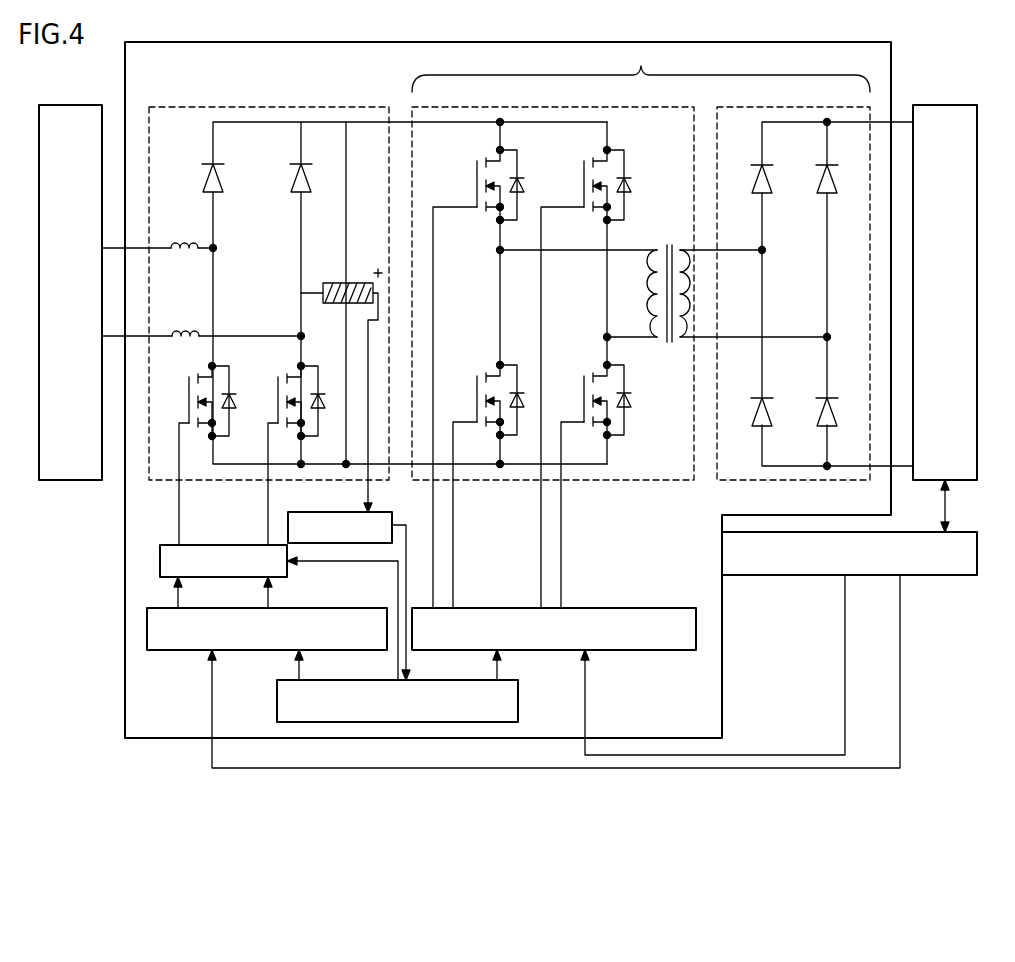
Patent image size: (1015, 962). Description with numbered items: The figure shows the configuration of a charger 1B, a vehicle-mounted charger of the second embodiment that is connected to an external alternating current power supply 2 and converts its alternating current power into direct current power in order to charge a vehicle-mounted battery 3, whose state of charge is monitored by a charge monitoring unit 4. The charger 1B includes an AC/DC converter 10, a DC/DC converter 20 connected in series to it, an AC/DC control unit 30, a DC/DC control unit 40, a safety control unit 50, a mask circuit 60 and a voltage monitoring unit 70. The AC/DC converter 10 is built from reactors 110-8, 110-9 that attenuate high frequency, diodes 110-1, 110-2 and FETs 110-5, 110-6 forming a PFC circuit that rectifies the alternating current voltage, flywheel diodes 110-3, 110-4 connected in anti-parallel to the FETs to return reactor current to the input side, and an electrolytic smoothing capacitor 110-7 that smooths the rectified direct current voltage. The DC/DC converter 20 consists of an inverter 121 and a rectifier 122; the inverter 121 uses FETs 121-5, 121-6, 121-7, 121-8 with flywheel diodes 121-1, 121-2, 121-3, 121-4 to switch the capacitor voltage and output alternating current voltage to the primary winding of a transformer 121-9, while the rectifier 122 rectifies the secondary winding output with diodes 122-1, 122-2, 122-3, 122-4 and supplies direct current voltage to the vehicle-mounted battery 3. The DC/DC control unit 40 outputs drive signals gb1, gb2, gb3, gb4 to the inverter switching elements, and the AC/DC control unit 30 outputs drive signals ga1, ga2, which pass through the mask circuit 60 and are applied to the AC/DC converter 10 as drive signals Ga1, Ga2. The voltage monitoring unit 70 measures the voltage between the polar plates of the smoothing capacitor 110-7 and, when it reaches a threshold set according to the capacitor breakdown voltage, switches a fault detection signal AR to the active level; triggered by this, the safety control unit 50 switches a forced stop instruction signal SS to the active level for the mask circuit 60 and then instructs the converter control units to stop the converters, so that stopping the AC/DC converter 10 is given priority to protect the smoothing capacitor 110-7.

The charger 1B is at (125, 592).
The external alternating current power supply 2 is at (72, 105).
The vehicle-mounted battery 3 is at (947, 105).
The charge monitoring unit 4 is at (946, 576).
The AC/DC converter 10 is at (285, 107).
The DC/DC converter 20 is at (641, 70).
The inverter 121 is at (600, 107).
The rectifier 122 is at (781, 107).
The AC/DC control unit 30 is at (172, 651).
The DC/DC control unit 40 is at (650, 651).
The safety control unit 50 is at (277, 701).
The mask circuit 60 is at (159, 561).
The voltage monitoring unit 70 is at (338, 544).
The diode 110-1 is at (216, 194).
The diode 110-2 is at (294, 176).
The flywheel diode 110-3 is at (232, 440).
The flywheel diode 110-4 is at (320, 440).
The FET 110-5 is at (200, 378).
The FET 110-6 is at (288, 378).
The smoothing capacitor 110-7 is at (311, 294).
The reactor 110-8 is at (179, 238).
The reactor 110-9 is at (182, 326).
The flywheel diode 121-1 is at (517, 186).
The flywheel diode 121-2 is at (516, 383).
The flywheel diode 121-3 is at (626, 186).
The flywheel diode 121-4 is at (625, 398).
The FET 121-5 is at (478, 176).
The FET 121-6 is at (479, 372).
The FET 121-7 is at (583, 176).
The FET 121-8 is at (591, 366).
The transformer 121-9 is at (668, 242).
The diode 122-1 is at (772, 181).
The diode 122-2 is at (769, 394).
The diode 122-3 is at (821, 193).
The diode 122-4 is at (821, 418).
The drive signal Ga1 is at (179, 505).
The drive signal Ga2 is at (268, 530).
The drive signal ga1 is at (181, 595).
The drive signal ga2 is at (271, 595).
The drive signal gb1 is at (434, 551).
The drive signal gb2 is at (454, 524).
The drive signal gb3 is at (540, 568).
The drive signal gb4 is at (562, 568).
The fault detection signal AR is at (402, 525).
The forced stop instruction signal SS is at (372, 562).